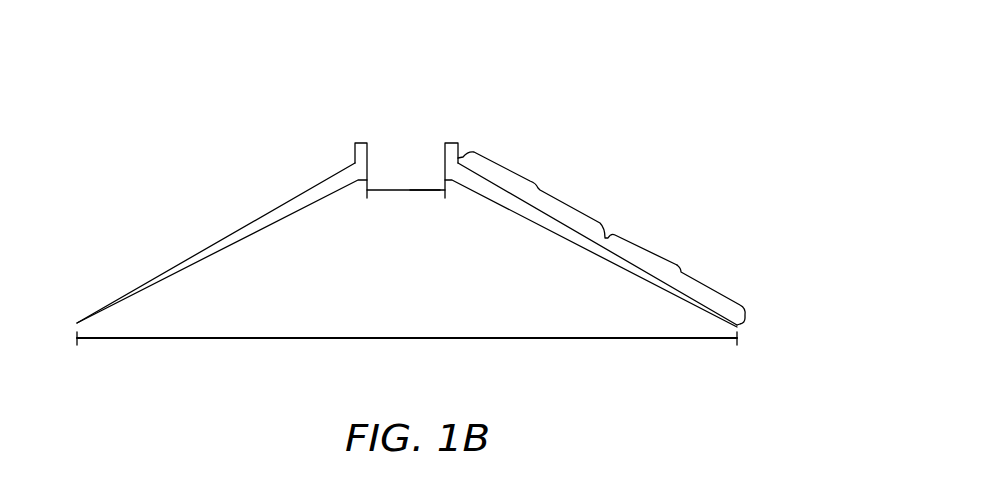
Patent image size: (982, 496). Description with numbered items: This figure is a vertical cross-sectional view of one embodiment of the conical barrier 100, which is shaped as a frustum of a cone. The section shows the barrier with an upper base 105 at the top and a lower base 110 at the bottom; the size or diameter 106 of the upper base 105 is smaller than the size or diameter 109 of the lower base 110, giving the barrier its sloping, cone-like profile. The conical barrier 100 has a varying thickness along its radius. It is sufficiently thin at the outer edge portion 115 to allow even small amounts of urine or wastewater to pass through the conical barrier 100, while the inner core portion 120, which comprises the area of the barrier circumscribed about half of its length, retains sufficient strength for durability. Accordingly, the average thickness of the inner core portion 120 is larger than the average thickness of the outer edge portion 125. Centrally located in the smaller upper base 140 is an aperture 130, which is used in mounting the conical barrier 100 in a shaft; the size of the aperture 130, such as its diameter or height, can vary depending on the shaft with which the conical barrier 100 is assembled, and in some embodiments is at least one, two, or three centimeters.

The conical barrier 100 is at (735, 105).
The upper base 105 is at (404, 223).
The size of the upper base 106 is at (424, 191).
The size of the lower base 109 is at (571, 339).
The lower base 110 is at (269, 367).
The outer edge portion 115 is at (79, 320).
The inner core portion 120 is at (542, 188).
The outer edge portion 125 is at (682, 268).
The aperture 130 is at (411, 128).
The smaller upper base 140 is at (448, 143).